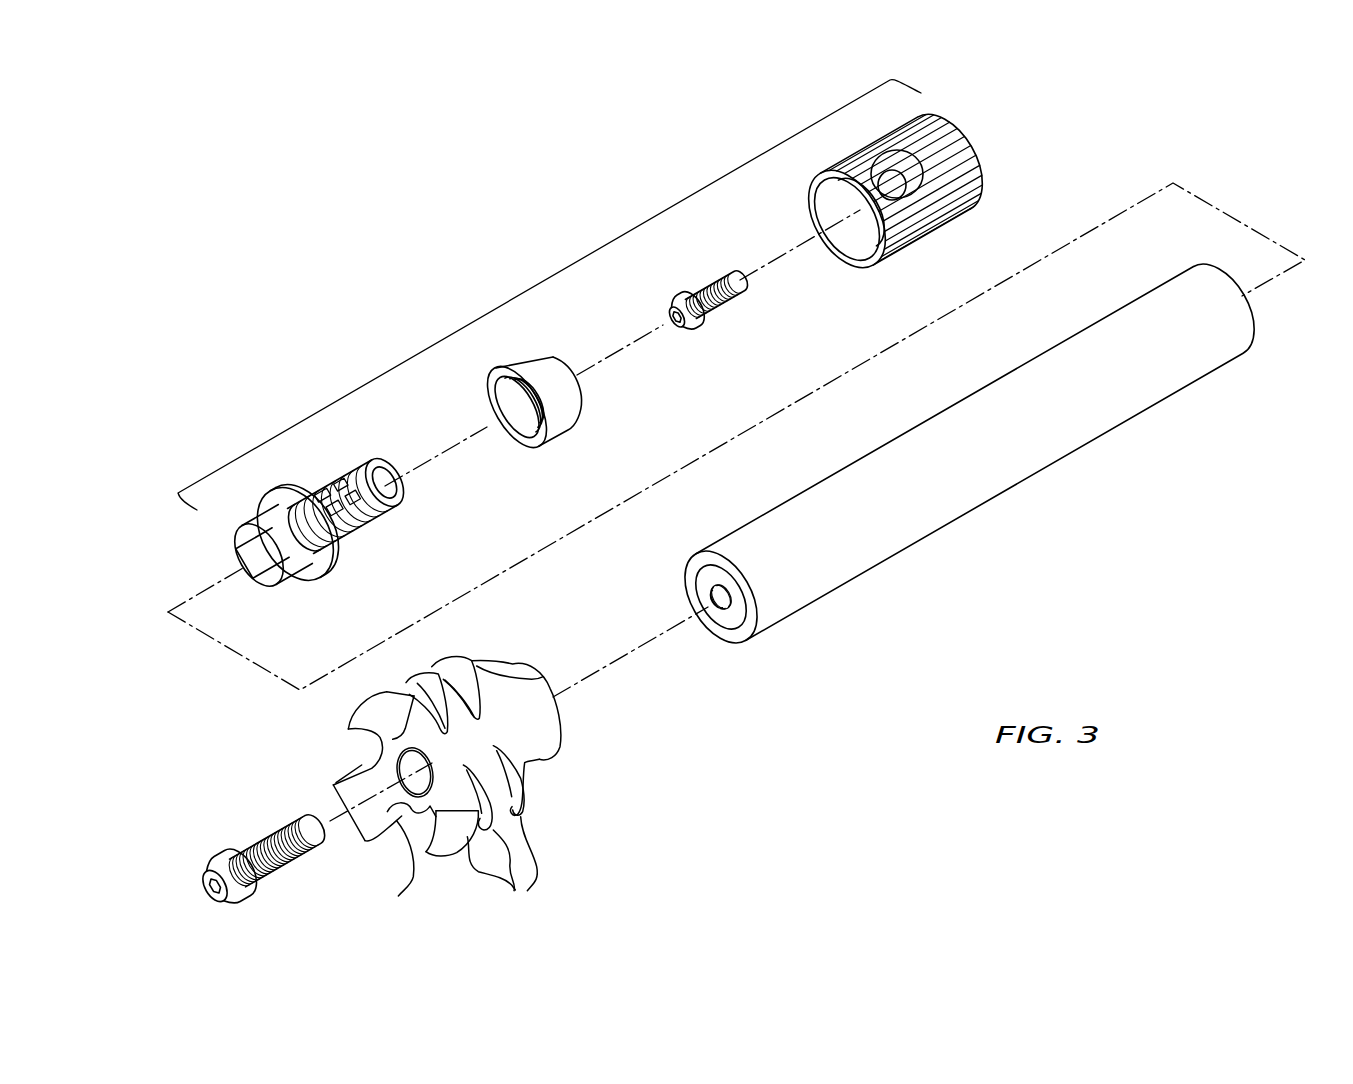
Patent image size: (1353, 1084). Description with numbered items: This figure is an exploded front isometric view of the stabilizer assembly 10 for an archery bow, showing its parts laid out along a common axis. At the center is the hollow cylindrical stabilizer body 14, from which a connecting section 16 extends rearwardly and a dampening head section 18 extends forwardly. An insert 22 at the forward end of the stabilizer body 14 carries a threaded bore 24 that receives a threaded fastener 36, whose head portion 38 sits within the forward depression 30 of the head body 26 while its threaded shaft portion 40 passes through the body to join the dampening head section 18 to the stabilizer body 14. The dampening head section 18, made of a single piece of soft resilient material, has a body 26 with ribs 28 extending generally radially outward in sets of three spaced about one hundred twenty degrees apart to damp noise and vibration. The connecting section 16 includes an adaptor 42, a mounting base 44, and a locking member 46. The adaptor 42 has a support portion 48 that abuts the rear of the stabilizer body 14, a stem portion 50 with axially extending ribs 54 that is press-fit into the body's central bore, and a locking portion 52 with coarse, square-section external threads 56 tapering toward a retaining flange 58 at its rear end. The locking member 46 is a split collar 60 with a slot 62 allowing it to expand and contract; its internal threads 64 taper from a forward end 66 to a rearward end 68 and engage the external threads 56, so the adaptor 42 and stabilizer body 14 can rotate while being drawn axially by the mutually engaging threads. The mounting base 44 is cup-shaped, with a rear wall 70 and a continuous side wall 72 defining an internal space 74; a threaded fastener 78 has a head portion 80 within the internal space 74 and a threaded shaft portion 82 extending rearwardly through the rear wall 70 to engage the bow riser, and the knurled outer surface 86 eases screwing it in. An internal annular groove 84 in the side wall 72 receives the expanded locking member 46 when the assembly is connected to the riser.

The stabilizer assembly 10 is at (1170, 600).
The stabilizer body 14 is at (954, 470).
The connecting section 16 is at (542, 282).
The dampening head section 18 is at (480, 769).
The insert 22 is at (724, 619).
The threaded bore 24 is at (712, 601).
The body 26 is at (546, 700).
The ribs 28 is at (521, 860).
The forward depression 30 is at (418, 852).
The threaded fastener 36 is at (258, 865).
The head portion 38 is at (238, 898).
The threaded shaft portion 40 is at (296, 857).
The adaptor 42 is at (294, 527).
The mounting base 44 is at (891, 204).
The locking member 46 is at (533, 405).
The support portion 48 is at (282, 500).
The stem portion 50 is at (245, 552).
The locking portion 52 is at (333, 477).
The axially extending ribs 54 is at (305, 590).
The external threads 56 is at (360, 543).
The retaining flange 58 is at (373, 467).
The collar 60 is at (524, 362).
The slot 62 is at (516, 407).
The internal threads 64 is at (529, 400).
The forward end 66 is at (547, 363).
The rearward end 68 is at (517, 407).
The rear wall 70 is at (910, 183).
The side wall 72 is at (922, 237).
The internal space 74 is at (866, 207).
The threaded fastener 78 is at (700, 337).
The head portion 80 is at (714, 322).
The threaded shaft portion 82 is at (733, 298).
The internal annular groove 84 is at (847, 219).
The knurled outer surface 86 is at (960, 130).